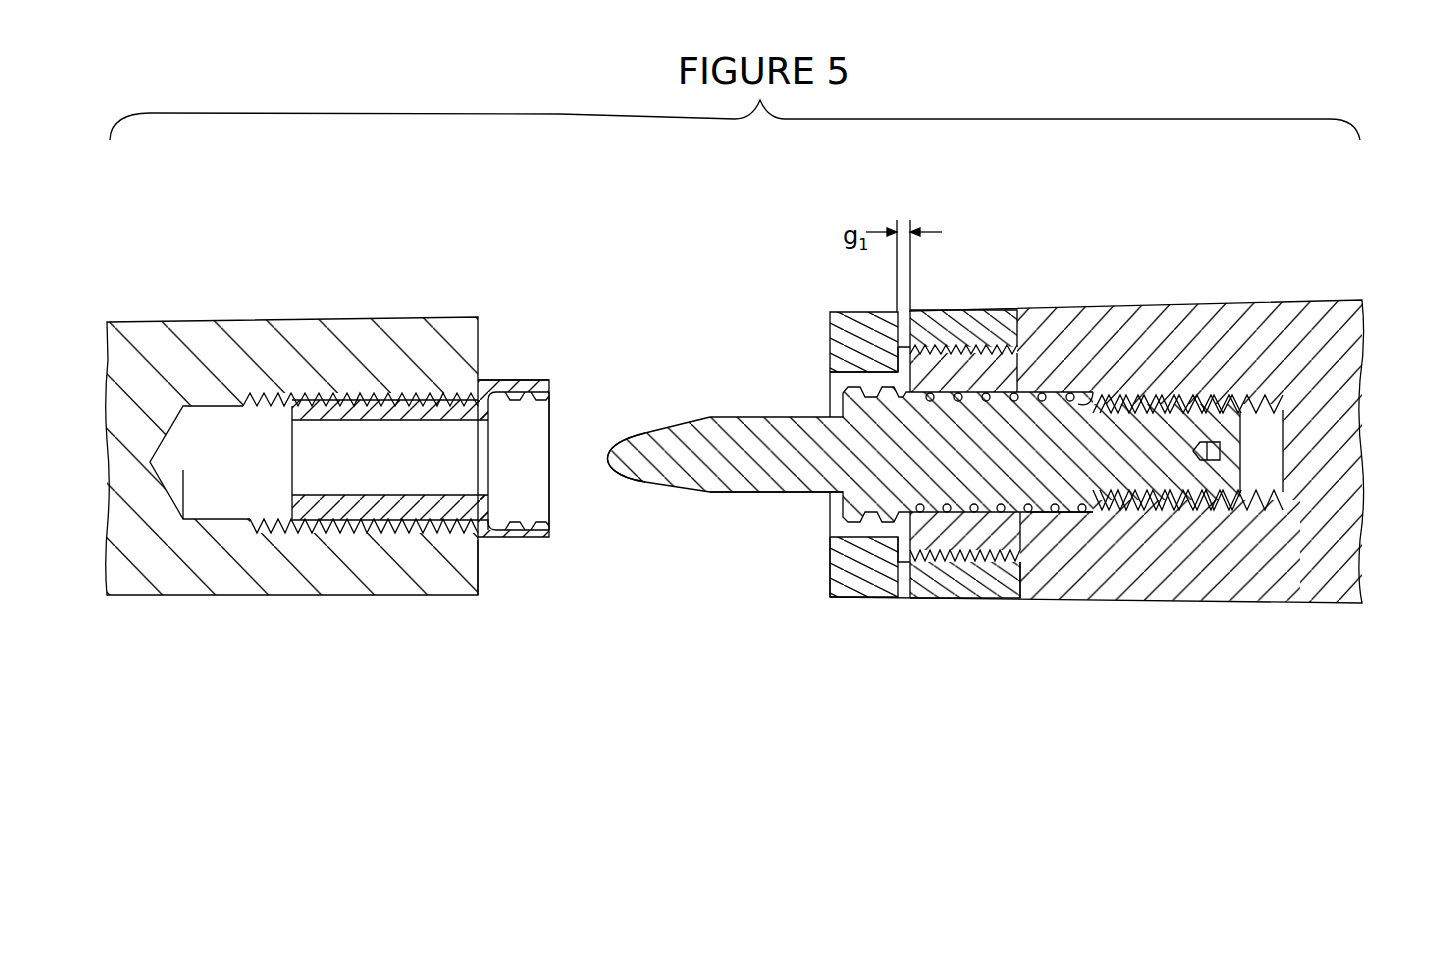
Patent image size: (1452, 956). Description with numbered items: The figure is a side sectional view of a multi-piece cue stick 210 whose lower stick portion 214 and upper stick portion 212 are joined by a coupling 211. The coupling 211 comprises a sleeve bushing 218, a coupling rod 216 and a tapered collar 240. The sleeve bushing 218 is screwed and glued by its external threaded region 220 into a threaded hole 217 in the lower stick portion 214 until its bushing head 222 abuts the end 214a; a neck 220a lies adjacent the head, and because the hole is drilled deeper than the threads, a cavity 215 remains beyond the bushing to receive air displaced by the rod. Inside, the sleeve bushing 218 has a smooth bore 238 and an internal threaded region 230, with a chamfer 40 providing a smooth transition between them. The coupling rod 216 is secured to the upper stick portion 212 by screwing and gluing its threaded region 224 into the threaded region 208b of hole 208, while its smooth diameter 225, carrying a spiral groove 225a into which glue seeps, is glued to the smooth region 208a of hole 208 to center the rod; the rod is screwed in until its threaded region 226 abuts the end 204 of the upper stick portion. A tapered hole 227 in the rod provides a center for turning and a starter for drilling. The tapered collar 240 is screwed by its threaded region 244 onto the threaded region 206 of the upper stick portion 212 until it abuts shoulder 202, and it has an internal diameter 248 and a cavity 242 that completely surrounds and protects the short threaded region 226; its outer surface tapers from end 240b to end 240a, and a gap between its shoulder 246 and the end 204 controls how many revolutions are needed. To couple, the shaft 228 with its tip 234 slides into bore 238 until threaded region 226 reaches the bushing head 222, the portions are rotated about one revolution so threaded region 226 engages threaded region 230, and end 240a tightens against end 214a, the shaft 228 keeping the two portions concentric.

The multi-piece cue stick 210 is at (745, 226).
The coupling 211 is at (655, 588).
The lower stick portion 214 is at (262, 320).
The end of lower stick portion 214a is at (480, 568).
The cavity 215 is at (225, 500).
The threaded hole 217 is at (268, 405).
The sleeve bushing 218 is at (507, 378).
The external threaded region 220 is at (400, 520).
The neck 220a is at (480, 536).
The bushing head 222 is at (527, 380).
The internal threaded region 230 is at (548, 410).
The bore 238 is at (372, 495).
The chamfer 40 is at (481, 418).
The coupling rod 216 is at (703, 416).
The tip 234 is at (622, 462).
The shaft 228 is at (720, 495).
The threaded region 224 is at (1160, 508).
The tapered hole 227 is at (1243, 455).
The upper stick portion 212 is at (1220, 302).
The shoulder 202 is at (1023, 326).
The threaded region 206 is at (1003, 310).
The end of upper stick portion 204 is at (930, 350).
The threaded region 244 is at (978, 563).
The internal diameter 248 is at (906, 564).
The end of collar 240b is at (1020, 580).
The hole 208 is at (1300, 447).
The threaded region of hole 208b is at (1300, 425).
The smooth region of hole 208a is at (1050, 514).
The diameter 225 is at (1070, 514).
The spiral groove 225a is at (1093, 392).
The shoulder 246 is at (888, 355).
The threaded region 226 is at (834, 391).
The tapered collar 240 is at (855, 598).
The cavity 242 is at (833, 522).
The end of collar 240a is at (830, 570).